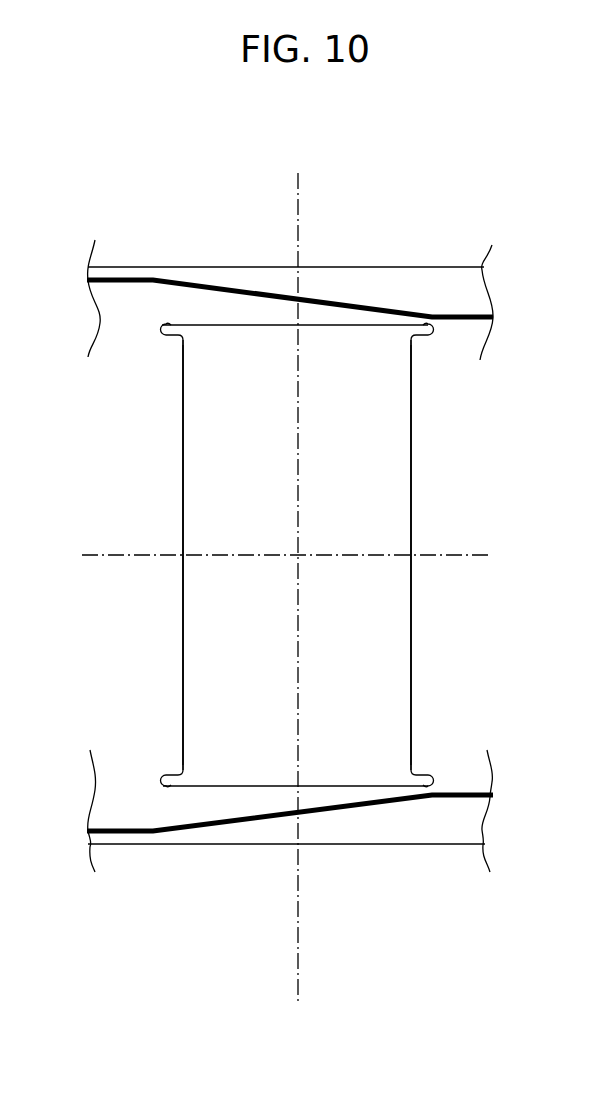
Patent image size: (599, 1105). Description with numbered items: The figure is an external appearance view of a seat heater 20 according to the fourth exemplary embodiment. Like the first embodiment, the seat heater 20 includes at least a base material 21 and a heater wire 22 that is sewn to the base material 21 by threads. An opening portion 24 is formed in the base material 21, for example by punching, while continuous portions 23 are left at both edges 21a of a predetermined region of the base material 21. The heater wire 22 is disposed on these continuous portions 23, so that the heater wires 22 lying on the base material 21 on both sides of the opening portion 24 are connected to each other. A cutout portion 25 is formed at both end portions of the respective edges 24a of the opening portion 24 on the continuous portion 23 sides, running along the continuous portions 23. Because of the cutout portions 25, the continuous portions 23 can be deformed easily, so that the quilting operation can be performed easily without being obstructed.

The seat heater 20 is at (80, 141).
The base material 21 is at (128, 430).
The edge of base material 21a is at (318, 262).
The heater wire 22 is at (365, 305).
The continuous portion 23 is at (270, 283).
The opening portion 24 is at (330, 760).
The edge of opening portion 24a is at (183, 533).
The cutout portion 25 is at (158, 322).